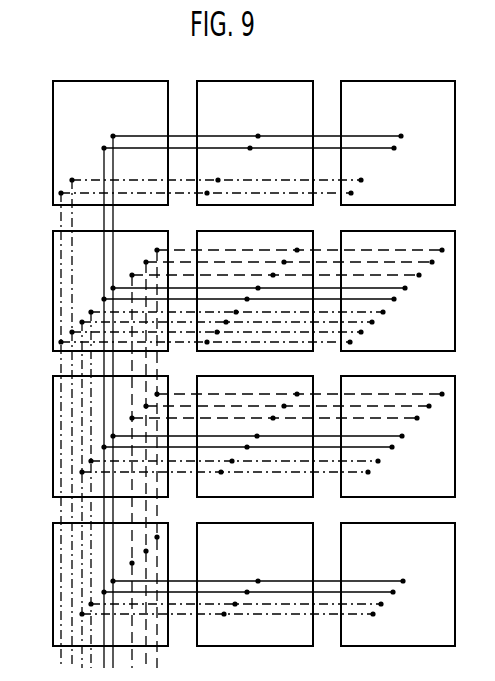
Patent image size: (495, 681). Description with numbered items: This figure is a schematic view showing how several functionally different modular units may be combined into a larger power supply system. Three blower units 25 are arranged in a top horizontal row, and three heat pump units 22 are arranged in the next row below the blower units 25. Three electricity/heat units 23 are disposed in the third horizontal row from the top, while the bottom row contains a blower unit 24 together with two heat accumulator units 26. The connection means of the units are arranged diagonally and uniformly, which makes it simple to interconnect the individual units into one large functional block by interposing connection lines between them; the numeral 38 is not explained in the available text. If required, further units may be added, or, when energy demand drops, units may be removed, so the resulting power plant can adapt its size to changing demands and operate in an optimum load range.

The input connection lines 38 is at (202, 164).
The blower unit 25 is at (121, 117).
The heat pump unit 22 is at (53, 321).
The electricity/heat unit 23 is at (53, 453).
The blower unit 24 is at (53, 593).
The heat accumulator unit 26 is at (262, 568).